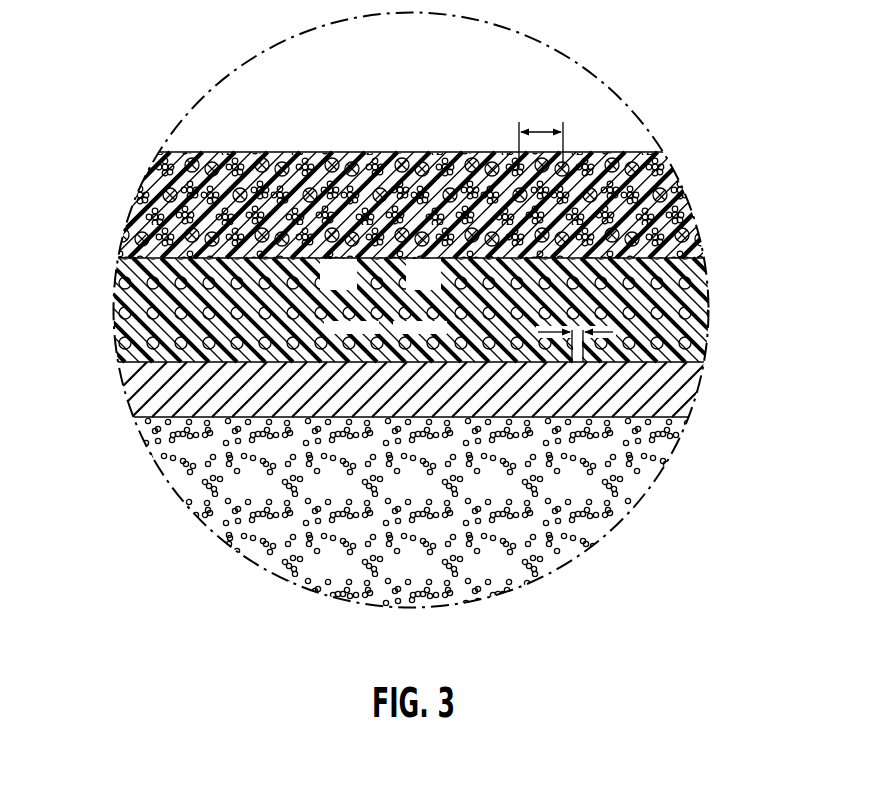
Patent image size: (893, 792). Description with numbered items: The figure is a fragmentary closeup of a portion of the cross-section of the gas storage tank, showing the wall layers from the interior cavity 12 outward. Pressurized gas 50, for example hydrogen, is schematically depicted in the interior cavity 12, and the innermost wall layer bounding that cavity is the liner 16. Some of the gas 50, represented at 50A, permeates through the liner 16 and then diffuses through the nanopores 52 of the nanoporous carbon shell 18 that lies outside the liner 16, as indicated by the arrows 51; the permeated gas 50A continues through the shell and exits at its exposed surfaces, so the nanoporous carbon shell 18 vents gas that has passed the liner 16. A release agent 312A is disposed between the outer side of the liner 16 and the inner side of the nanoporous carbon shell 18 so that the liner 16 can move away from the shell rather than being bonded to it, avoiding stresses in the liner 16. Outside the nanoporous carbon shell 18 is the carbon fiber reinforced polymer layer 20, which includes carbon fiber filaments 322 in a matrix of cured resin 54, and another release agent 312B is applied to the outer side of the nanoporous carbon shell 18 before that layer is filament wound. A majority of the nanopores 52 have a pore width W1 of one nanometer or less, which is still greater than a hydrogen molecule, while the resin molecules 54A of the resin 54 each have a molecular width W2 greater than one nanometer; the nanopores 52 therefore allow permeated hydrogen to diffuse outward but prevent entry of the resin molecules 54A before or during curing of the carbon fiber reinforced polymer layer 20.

The interior cavity 12 is at (443, 520).
The liner 16 is at (690, 385).
The nanoporous carbon shell 18 is at (115, 333).
The carbon fiber reinforced polymer layer 20 is at (633, 151).
The pressurized gas 50 is at (628, 462).
The permeated gas 50A is at (404, 409).
The arrows 51 is at (375, 327).
The nanopores 52 is at (708, 317).
The cured resin 54 is at (260, 152).
The resin molecules 54A is at (400, 153).
The release agent 312A is at (140, 358).
The release agent 312B is at (167, 255).
The carbon fiber filaments 322 is at (367, 152).
The pore width W1 is at (587, 330).
The molecular width W2 is at (540, 133).